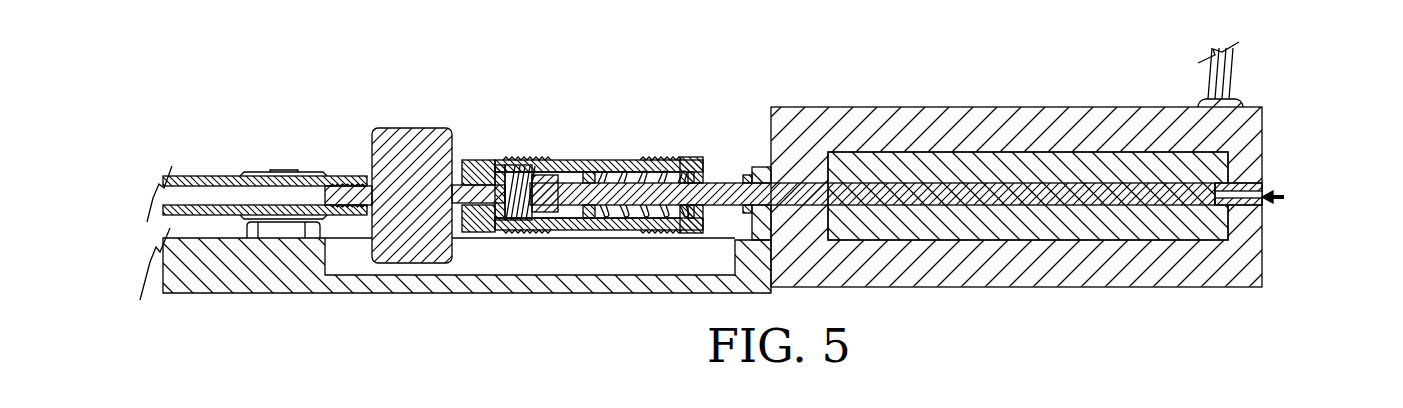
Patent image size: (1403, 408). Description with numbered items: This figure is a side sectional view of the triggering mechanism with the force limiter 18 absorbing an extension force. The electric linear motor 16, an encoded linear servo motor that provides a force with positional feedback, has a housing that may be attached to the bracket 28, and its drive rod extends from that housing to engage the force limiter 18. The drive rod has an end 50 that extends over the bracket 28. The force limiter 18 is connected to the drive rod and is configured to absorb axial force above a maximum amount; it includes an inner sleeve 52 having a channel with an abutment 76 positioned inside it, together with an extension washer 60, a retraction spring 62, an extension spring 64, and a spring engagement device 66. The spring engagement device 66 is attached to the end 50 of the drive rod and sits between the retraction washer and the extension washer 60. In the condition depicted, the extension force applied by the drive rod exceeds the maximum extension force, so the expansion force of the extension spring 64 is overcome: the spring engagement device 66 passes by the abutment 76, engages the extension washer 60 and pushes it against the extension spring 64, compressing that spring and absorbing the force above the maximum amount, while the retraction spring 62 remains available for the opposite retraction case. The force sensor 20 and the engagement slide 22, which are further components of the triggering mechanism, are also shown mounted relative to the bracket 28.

The electric linear motor 16 is at (1013, 96).
The force limiter 18 is at (582, 195).
The force sensor 20 is at (396, 117).
The engagement slide 22 is at (223, 163).
The bracket 28 is at (461, 306).
The end 50 is at (728, 186).
The inner sleeve 52 is at (621, 148).
The extension washer 60 is at (553, 160).
The retraction spring 62 is at (637, 218).
The extension spring 64 is at (502, 168).
The spring engagement device 66 is at (549, 222).
The abutment 76 is at (596, 222).